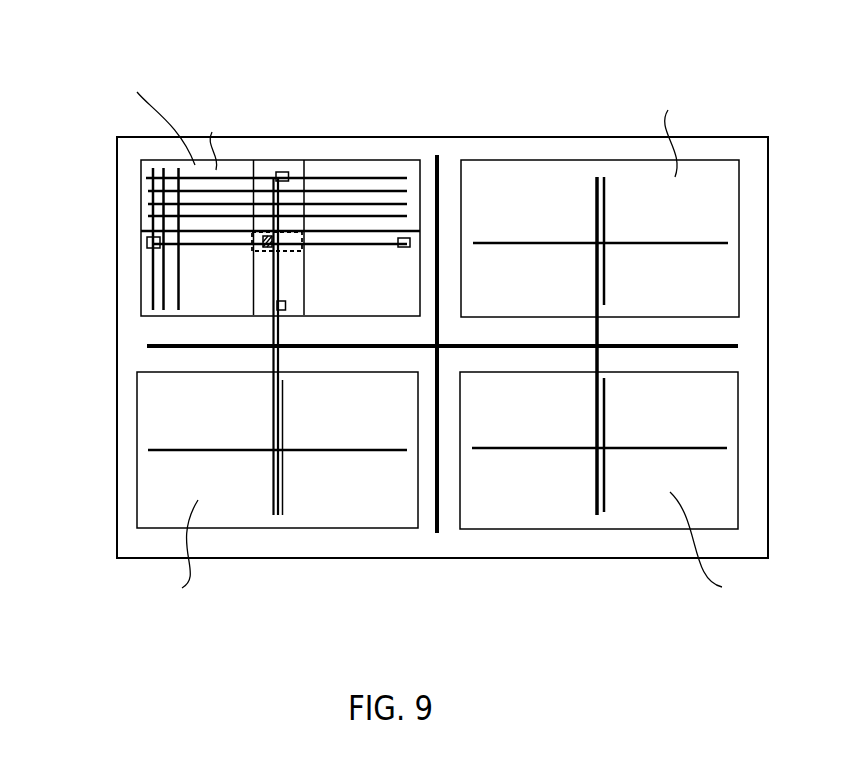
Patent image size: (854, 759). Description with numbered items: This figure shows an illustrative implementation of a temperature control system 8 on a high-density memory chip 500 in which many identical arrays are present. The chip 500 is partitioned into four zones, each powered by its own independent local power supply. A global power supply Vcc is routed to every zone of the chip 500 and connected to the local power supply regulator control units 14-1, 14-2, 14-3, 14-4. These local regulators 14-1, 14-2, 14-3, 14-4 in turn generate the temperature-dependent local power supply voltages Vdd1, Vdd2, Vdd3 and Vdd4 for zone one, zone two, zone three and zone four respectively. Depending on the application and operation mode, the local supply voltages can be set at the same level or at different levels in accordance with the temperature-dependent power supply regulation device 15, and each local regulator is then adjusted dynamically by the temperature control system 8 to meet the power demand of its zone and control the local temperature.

The high-density memory chip 500 is at (395, 42).
The temperature control system 8 is at (262, 238).
The local power supply regulator control unit 14-1 is at (285, 305).
The local power supply regulator control unit 14-2 is at (147, 241).
The local power supply regulator control unit 14-3 is at (289, 174).
The local power supply regulator control unit 14-4 is at (404, 247).
The temperature-dependent power supply regulation device 15 is at (253, 251).